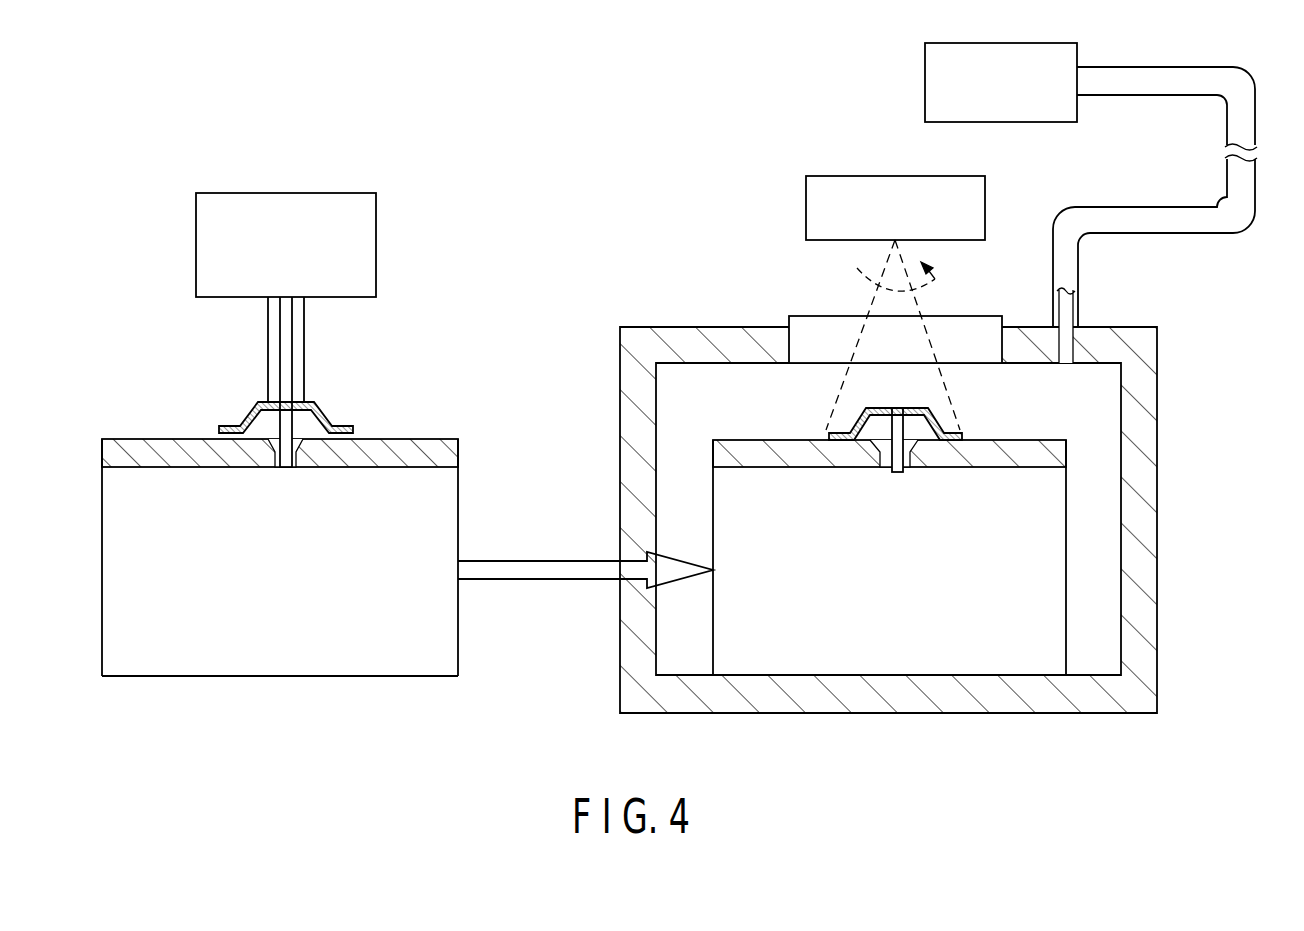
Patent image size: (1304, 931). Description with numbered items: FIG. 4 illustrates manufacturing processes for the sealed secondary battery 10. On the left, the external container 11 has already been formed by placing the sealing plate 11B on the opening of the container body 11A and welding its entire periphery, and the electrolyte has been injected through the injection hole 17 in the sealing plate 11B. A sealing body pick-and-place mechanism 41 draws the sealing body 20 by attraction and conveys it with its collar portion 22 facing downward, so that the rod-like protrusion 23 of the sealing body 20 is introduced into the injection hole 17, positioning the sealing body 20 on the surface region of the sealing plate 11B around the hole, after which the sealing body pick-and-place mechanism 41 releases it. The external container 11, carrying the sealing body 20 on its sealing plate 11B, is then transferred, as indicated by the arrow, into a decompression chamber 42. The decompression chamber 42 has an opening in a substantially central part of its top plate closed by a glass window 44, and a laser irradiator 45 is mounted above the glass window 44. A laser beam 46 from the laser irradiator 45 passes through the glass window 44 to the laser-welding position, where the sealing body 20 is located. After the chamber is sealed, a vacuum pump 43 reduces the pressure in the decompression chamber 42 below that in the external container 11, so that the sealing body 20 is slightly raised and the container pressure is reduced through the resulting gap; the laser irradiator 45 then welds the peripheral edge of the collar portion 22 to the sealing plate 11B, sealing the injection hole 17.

The sealed secondary battery 10 is at (577, 540).
The external container 11 is at (102, 561).
The container body 11A is at (287, 668).
The sealing plate 11B is at (412, 440).
The injection hole 17 is at (295, 470).
The sealing body 20 is at (325, 412).
The collar portion 22 is at (235, 424).
The rod-like protrusion 23 is at (277, 470).
The sealing body pick-and-place mechanism 41 is at (376, 262).
The decompression chamber 42 is at (1157, 517).
The vacuum pump 43 is at (925, 80).
The glass window 44 is at (810, 316).
The laser irradiator 45 is at (806, 208).
The laser beam 46 is at (920, 304).